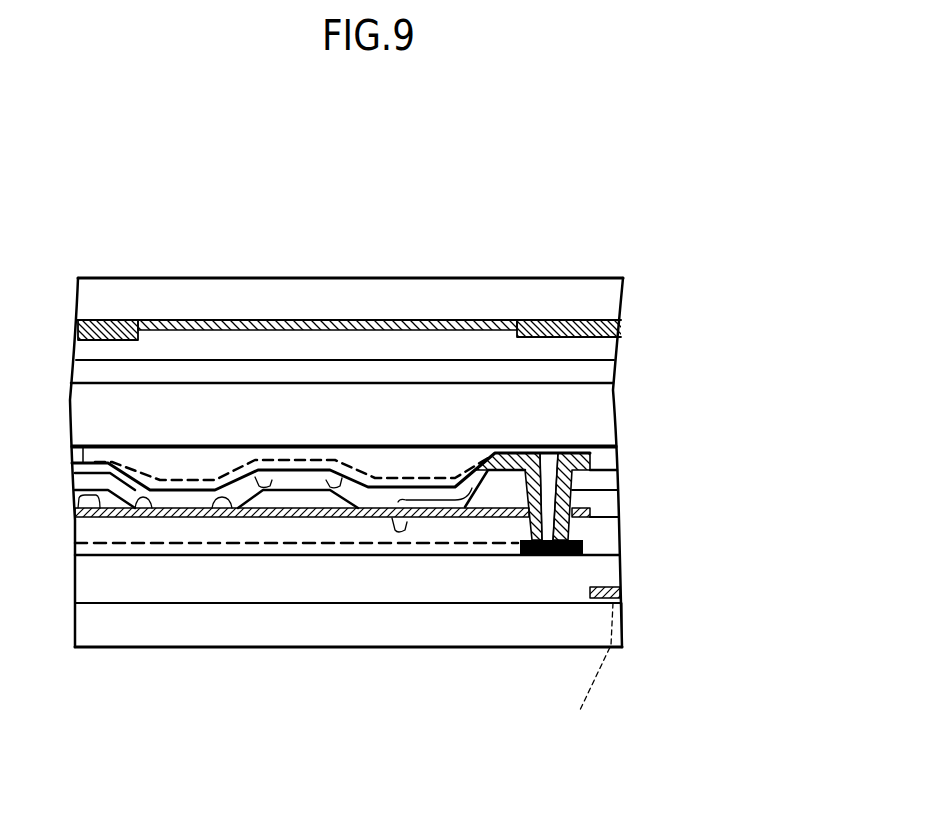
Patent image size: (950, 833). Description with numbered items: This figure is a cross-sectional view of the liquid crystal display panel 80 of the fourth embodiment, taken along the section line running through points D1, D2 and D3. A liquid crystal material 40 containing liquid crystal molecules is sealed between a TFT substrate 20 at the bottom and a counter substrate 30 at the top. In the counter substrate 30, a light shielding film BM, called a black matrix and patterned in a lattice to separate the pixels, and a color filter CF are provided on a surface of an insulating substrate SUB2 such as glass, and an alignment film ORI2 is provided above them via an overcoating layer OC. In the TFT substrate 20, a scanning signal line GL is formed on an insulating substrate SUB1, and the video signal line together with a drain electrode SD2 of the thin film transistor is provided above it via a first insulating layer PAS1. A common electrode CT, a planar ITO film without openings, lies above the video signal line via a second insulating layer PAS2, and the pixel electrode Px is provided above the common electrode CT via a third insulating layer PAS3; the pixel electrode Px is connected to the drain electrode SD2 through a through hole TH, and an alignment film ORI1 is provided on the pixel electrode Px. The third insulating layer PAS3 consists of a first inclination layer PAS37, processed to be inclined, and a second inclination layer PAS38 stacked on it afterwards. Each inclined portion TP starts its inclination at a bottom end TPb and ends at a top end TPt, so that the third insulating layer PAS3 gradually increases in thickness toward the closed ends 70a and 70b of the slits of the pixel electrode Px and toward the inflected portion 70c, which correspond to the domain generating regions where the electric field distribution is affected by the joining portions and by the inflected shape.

The liquid crystal display panel 80 is at (409, 119).
The counter substrate 30 is at (350, 279).
The liquid crystal material 40 is at (68, 385).
The TFT substrate 20 is at (405, 579).
The insulating substrate SUB2 is at (283, 278).
The color filter CF is at (396, 322).
The light shielding film BM is at (140, 318).
The overcoating layer OC is at (550, 350).
The alignment film ORI2 is at (555, 370).
The alignment film ORI1 is at (553, 450).
The common electrode CT is at (390, 486).
The pixel electrode Px is at (275, 458).
The inclined portion TP is at (236, 488).
The top end TPt is at (112, 478).
The bottom end TPb is at (213, 508).
The closed end 70a is at (487, 470).
The closed end 70b is at (83, 446).
The inflected portion 70c is at (297, 488).
The through hole TH is at (543, 518).
The third insulating layer PAS3 is at (440, 532).
The second inclination layer PAS38 is at (585, 480).
The first inclination layer PAS37 is at (598, 495).
The second insulating layer PAS2 is at (588, 530).
The drain electrode SD2 is at (582, 548).
The first insulating layer PAS1 is at (545, 565).
The insulating substrate SUB1 is at (338, 632).
The scanning signal line GL is at (590, 672).
The section line point D1 is at (82, 662).
The section line point D2 is at (317, 662).
The section line point D3 is at (629, 662).